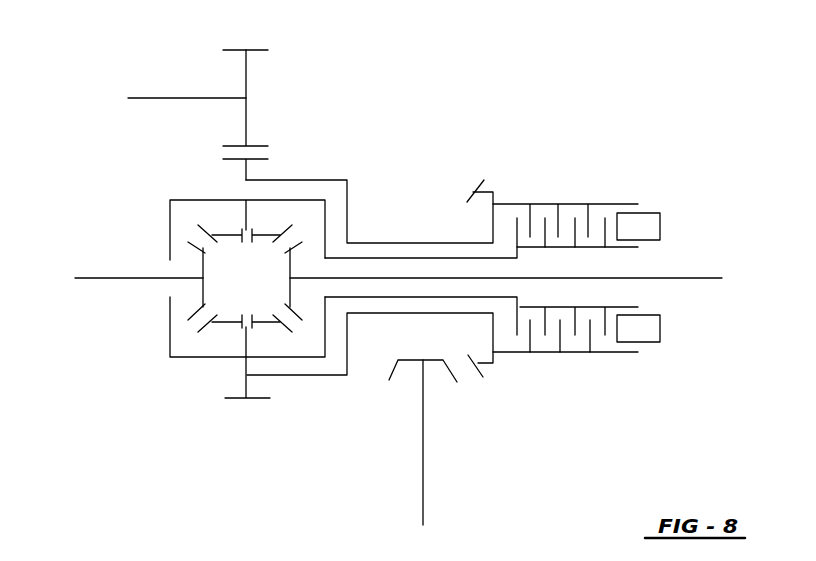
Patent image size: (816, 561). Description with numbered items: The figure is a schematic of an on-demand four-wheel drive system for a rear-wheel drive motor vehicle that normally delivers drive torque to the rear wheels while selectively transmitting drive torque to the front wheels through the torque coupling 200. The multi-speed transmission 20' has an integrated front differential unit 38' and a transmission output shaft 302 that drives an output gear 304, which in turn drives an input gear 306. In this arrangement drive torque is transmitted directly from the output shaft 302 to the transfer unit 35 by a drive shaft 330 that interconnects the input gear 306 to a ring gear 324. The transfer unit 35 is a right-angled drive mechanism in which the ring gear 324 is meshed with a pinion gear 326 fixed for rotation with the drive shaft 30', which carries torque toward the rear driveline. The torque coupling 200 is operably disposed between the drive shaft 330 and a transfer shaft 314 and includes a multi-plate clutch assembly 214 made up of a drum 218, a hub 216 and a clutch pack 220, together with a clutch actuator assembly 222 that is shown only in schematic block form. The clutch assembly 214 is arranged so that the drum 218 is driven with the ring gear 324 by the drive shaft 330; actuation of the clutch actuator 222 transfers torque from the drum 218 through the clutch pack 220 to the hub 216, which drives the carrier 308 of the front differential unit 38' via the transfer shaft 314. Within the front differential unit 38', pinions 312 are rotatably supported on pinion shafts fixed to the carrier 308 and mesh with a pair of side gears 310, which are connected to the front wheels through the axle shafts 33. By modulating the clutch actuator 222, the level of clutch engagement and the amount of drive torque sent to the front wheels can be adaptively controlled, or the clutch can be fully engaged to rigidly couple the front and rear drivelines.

The multi-speed transmission 20' is at (276, 97).
The output shaft 302 is at (149, 97).
The output gear 304 is at (234, 49).
The input gear 306 is at (260, 400).
The carrier 308 is at (205, 199).
The side gears 310 is at (290, 304).
The pinions 312 is at (256, 233).
The transfer shaft 314 is at (372, 258).
The ring gear 324 is at (482, 185).
The pinion gear 326 is at (417, 358).
The drive shaft 330 is at (427, 314).
The axle shafts 33 is at (105, 278).
The transfer unit 35 is at (479, 395).
The drive shaft 30' is at (459, 442).
The front differential unit 38' is at (134, 408).
The torque coupling 200 is at (713, 152).
The multi-plate clutch assembly 214 is at (613, 185).
The hub 216 is at (558, 248).
The drum 218 is at (572, 352).
The clutch pack 220 is at (565, 211).
The clutch actuator assembly 222 is at (659, 223).